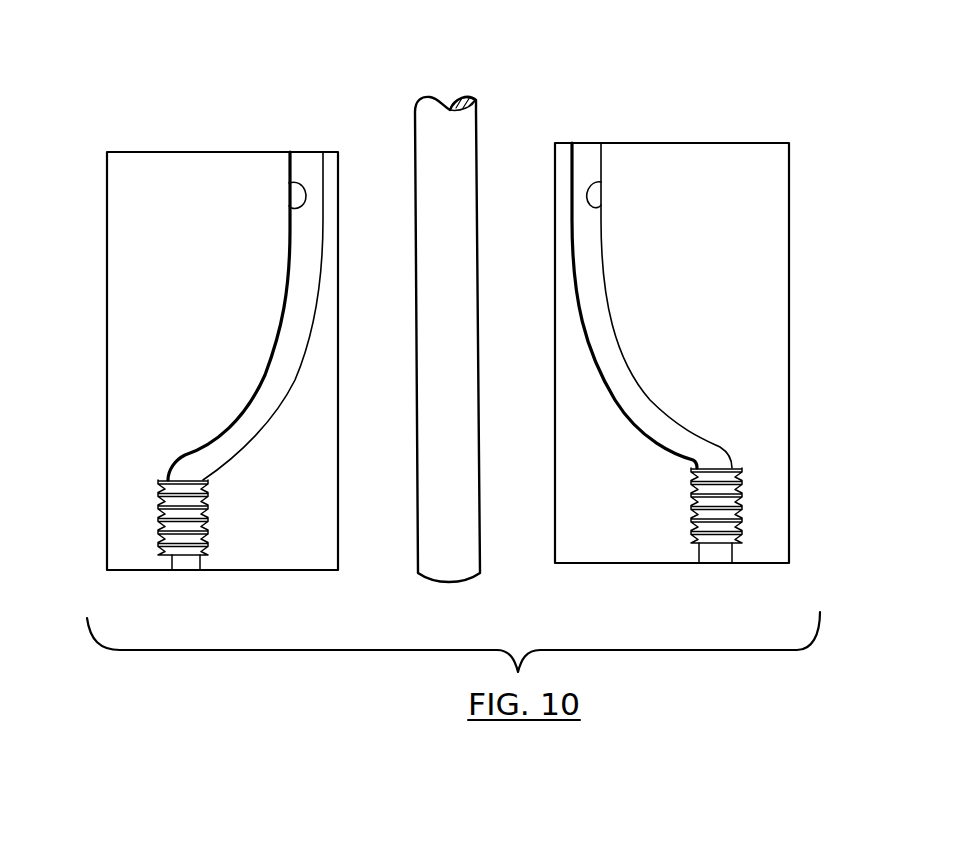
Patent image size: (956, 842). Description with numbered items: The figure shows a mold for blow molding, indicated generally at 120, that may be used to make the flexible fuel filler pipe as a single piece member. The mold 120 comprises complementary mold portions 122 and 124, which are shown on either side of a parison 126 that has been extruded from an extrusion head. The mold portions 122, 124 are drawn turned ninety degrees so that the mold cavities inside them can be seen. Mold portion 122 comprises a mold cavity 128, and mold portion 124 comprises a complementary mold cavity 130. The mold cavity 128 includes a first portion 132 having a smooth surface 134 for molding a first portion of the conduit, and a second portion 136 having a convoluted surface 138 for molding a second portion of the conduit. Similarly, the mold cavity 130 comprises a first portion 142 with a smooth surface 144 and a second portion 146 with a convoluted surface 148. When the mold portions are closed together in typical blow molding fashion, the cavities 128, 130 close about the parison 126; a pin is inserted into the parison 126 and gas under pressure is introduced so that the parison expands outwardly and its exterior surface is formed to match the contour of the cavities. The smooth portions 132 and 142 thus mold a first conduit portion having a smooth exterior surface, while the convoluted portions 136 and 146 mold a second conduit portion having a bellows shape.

The mold for blow molding 120 is at (242, 129).
The mold portion 122 is at (790, 365).
The mold portion 124 is at (108, 382).
The parison 126 is at (476, 141).
The mold cavity 128 is at (618, 335).
The mold cavity 130 is at (272, 355).
The first portion 132 is at (605, 248).
The smooth surface 134 is at (600, 182).
The second portion 136 is at (737, 503).
The convoluted surface 138 is at (712, 535).
The first portion 142 is at (290, 247).
The smooth surface 144 is at (290, 183).
The second portion 146 is at (165, 500).
The convoluted surface 148 is at (178, 540).